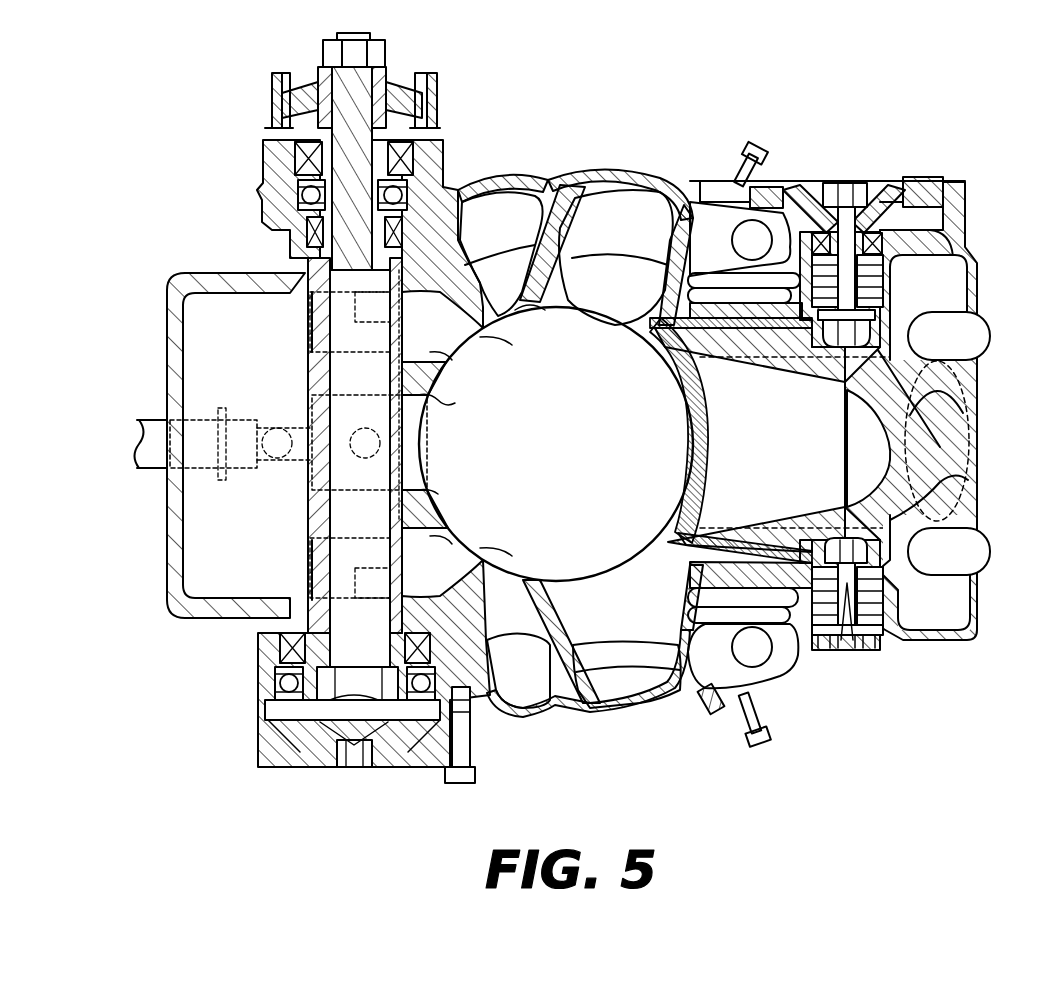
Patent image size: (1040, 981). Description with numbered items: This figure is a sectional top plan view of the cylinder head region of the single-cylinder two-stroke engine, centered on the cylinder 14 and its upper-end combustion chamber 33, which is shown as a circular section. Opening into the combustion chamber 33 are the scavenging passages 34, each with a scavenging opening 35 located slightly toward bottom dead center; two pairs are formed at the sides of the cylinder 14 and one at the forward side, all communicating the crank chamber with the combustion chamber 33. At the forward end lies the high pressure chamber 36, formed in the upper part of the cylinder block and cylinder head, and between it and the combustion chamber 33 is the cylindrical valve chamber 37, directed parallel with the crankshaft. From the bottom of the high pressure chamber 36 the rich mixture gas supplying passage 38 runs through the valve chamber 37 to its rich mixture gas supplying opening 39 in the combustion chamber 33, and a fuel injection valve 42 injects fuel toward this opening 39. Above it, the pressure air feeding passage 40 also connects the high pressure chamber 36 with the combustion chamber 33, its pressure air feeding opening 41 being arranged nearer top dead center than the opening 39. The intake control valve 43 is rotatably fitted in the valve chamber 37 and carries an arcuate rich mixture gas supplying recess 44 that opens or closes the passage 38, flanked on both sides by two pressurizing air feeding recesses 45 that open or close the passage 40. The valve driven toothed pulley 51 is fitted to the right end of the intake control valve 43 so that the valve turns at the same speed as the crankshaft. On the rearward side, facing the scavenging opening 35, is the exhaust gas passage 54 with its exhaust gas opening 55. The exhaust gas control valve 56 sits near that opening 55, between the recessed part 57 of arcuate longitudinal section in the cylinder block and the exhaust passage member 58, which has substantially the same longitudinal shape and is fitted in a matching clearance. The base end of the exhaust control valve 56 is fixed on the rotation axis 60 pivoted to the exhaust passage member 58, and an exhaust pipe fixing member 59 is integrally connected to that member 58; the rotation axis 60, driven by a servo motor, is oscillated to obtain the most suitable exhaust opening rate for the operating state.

The cylinder 14 is at (662, 536).
The combustion chamber 33 is at (576, 457).
The scavenging passage 34 is at (523, 228).
The scavenging opening 35 is at (606, 312).
The high pressure chamber 36 is at (233, 383).
The valve chamber 37 is at (286, 616).
The rich mixture gas supplying passage 38 is at (423, 407).
The rich mixture gas supplying opening 39 is at (430, 440).
The pressure air feeding passage 40 is at (432, 354).
The pressure air feeding opening 41 is at (478, 336).
The fuel injection valve 42 is at (148, 441).
The intake control valve 43 is at (330, 252).
The rich mixture gas supplying recess 44 is at (302, 486).
The pressurizing air feeding recess 45 is at (305, 320).
The valve driven toothed pulley 51 is at (437, 100).
The exhaust gas passage 54 is at (778, 472).
The exhaust gas opening 55 is at (655, 378).
The exhaust gas control valve 56 is at (695, 432).
The recessed part 57 is at (665, 345).
The exhaust passage member 58 is at (772, 366).
The exhaust pipe fixing member 59 is at (852, 402).
The rotation axis 60 is at (848, 207).